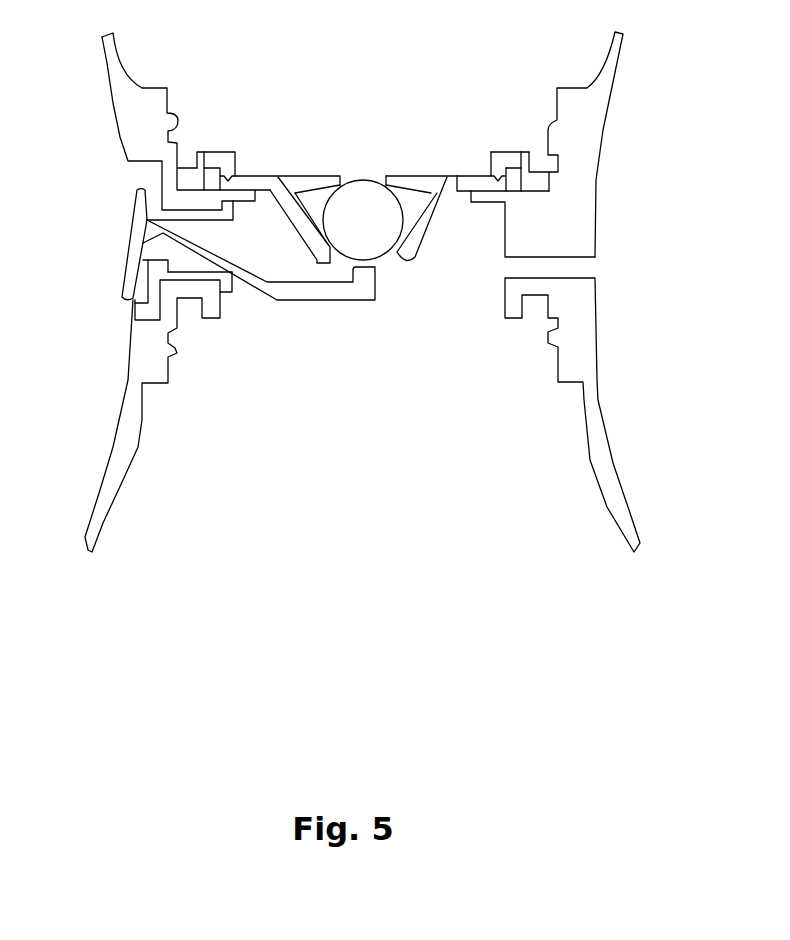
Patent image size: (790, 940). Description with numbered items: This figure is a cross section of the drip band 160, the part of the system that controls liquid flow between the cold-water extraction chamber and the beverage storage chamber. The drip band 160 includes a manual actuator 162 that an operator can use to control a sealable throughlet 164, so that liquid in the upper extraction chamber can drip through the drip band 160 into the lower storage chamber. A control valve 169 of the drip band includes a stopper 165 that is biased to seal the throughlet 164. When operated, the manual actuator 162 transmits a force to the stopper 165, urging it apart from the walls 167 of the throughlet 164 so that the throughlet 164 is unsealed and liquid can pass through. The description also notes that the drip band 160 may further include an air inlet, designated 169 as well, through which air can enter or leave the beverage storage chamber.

The drip band 160 is at (603, 130).
The manual actuator 162 is at (127, 268).
The sealable throughlet 164 is at (364, 177).
The stopper 165 is at (347, 212).
The walls of the throughlet 167 is at (410, 233).
The control valve 169 is at (296, 334).